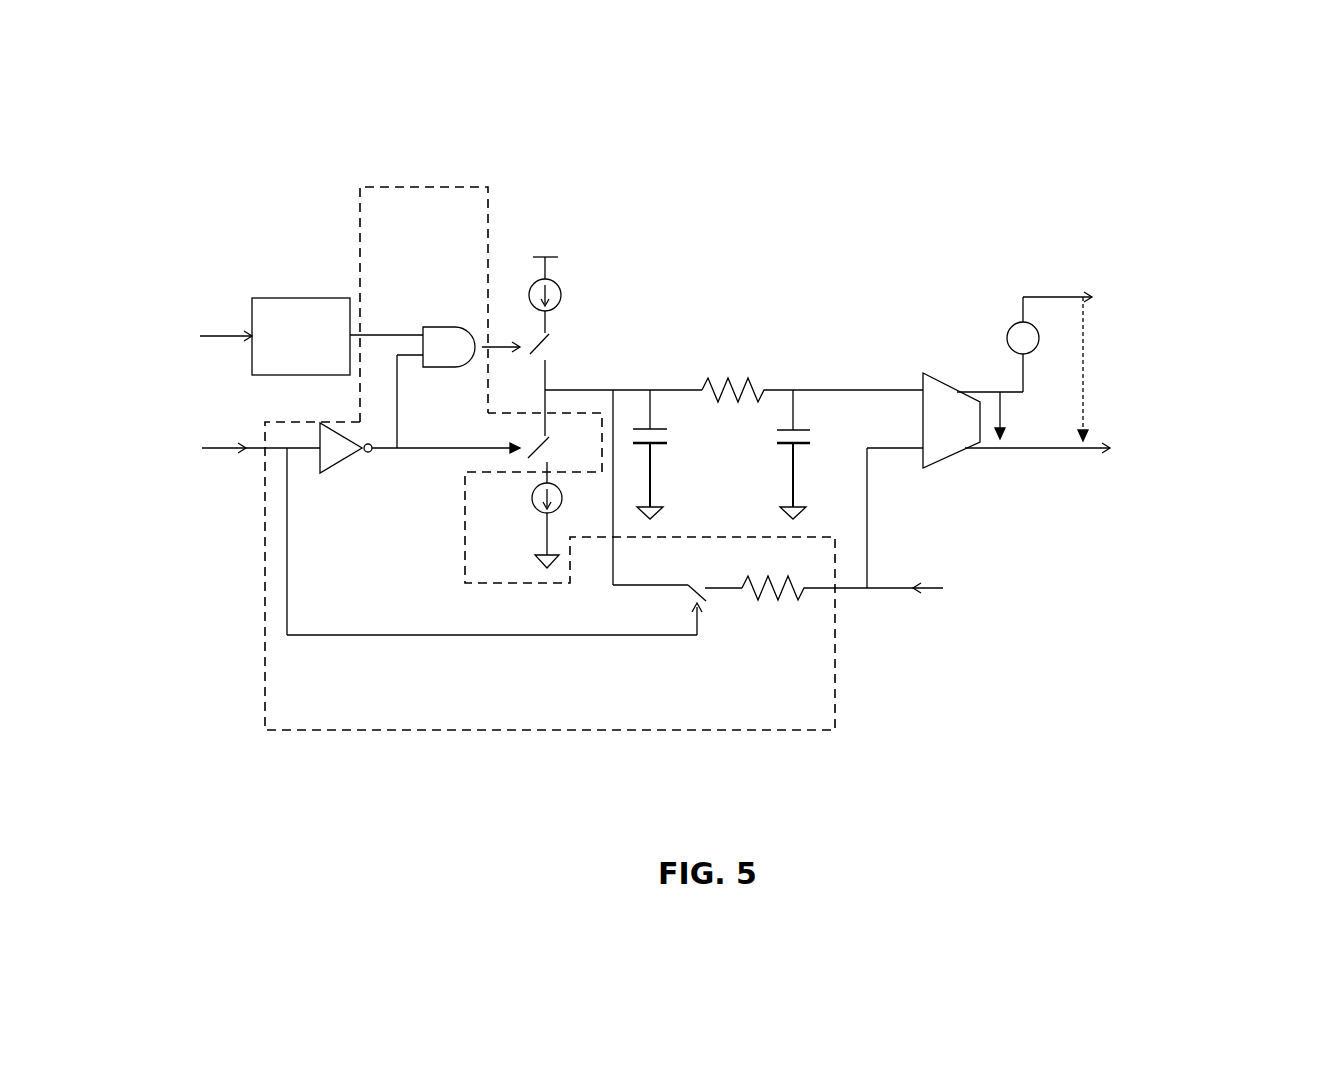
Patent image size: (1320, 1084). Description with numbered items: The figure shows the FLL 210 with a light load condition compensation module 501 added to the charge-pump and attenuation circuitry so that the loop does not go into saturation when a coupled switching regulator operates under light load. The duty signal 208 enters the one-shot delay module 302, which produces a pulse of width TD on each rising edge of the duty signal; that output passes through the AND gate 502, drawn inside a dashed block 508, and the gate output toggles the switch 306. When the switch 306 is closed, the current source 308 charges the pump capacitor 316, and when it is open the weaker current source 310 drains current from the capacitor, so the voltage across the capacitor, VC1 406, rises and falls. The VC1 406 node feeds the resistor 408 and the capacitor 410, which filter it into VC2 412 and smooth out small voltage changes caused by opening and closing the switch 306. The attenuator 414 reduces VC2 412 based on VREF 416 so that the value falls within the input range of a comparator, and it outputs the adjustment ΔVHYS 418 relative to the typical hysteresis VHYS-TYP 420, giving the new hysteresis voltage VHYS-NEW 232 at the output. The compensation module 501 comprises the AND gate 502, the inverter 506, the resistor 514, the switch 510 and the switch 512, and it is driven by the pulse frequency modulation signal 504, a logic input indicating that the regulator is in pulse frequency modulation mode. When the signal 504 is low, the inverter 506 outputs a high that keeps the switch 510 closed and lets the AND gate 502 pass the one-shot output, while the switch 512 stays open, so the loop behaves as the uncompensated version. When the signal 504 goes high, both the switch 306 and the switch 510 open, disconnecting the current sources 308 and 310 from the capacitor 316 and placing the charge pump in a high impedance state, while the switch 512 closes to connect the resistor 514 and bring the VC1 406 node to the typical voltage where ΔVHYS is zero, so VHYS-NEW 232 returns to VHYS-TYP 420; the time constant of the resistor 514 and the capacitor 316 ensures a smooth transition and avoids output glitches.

The FLL 210 is at (1273, 138).
The duty signal 208 is at (217, 300).
The one-shot delay module 302 is at (308, 296).
The AND gate 502 is at (442, 327).
The switch control logic block 508 is at (498, 323).
The current source I1 308 is at (585, 285).
The switch 306 is at (580, 332).
The VC1 406 is at (625, 372).
The resistor 408 is at (763, 376).
The VC2 412 is at (868, 367).
The capacitor CPUMP 316 is at (667, 452).
The capacitor 410 is at (782, 448).
The attenuator 414 is at (972, 492).
The VHYS-TYP 420 is at (1040, 350).
The VHYS-NEW 232 is at (1123, 340).
The ΔVHYS 418 is at (1045, 432).
The VREF 416 is at (947, 575).
The PFM signal 504 is at (218, 455).
The inverter 506 is at (355, 460).
The switch 510 is at (585, 463).
The current source I2 310 is at (532, 490).
The switch 512 is at (710, 605).
The resistor 514 is at (772, 633).
The light load condition compensation module 501 is at (837, 680).